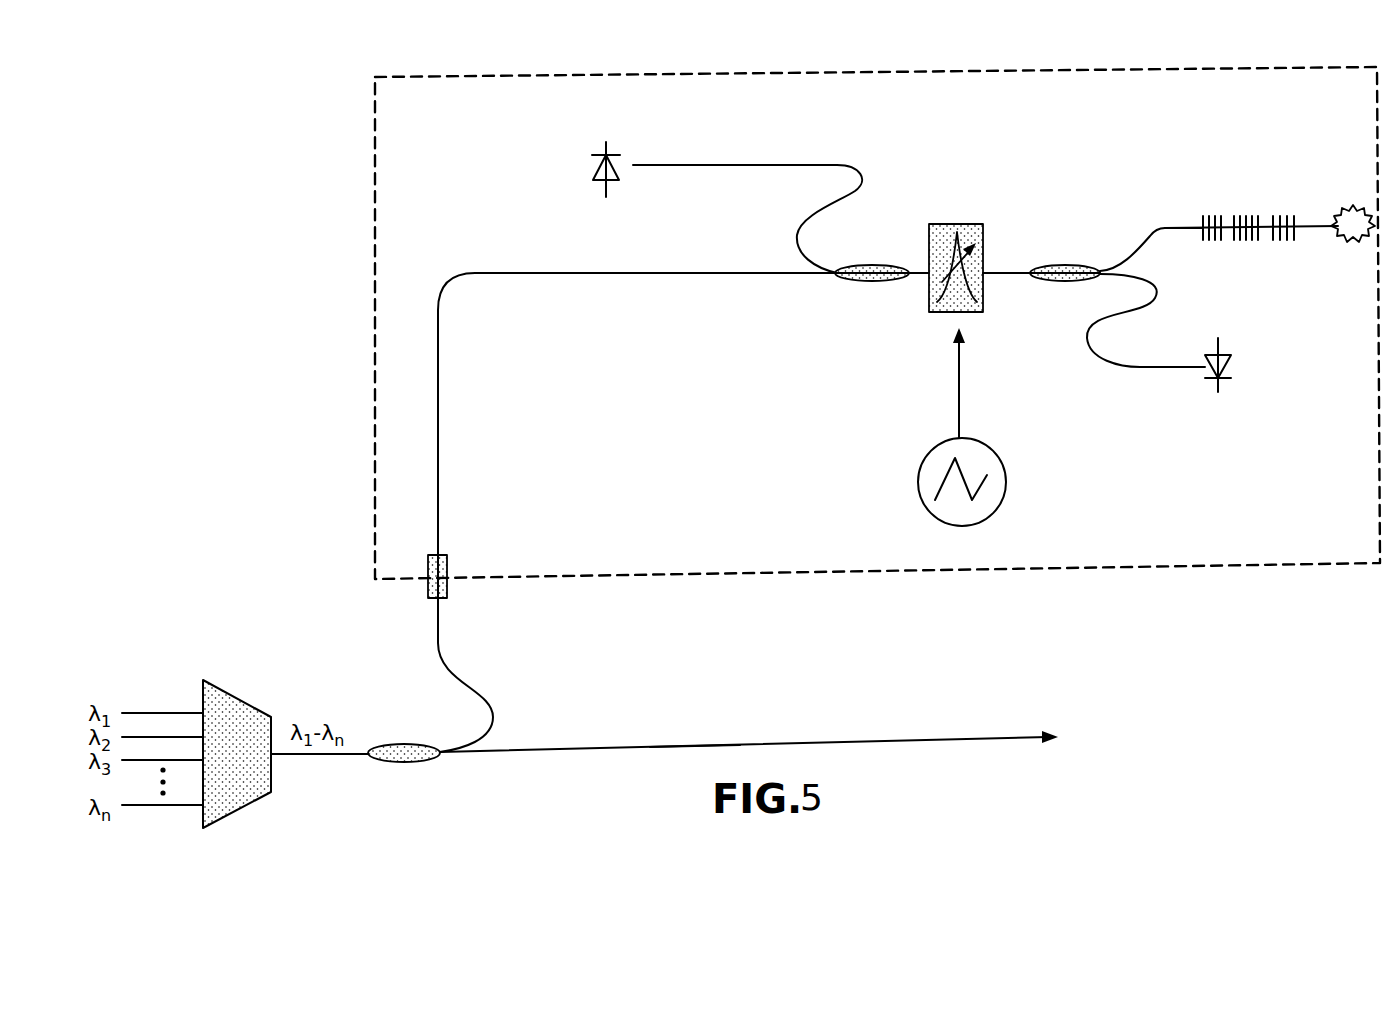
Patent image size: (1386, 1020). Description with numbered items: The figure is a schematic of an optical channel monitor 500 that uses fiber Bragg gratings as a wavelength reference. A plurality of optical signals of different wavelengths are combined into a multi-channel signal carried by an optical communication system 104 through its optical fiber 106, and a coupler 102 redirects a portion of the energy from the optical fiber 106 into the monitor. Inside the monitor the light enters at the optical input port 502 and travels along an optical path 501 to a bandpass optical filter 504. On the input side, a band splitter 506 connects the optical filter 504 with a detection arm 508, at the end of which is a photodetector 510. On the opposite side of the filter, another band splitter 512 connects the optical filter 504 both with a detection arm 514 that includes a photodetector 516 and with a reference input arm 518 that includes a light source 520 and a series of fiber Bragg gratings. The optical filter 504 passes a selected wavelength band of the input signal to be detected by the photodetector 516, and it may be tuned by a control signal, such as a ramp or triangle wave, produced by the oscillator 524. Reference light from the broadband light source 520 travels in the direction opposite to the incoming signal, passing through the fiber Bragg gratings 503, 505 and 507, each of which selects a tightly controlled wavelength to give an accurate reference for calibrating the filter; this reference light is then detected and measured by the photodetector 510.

The coupler 102 is at (405, 745).
The optical communication system 104 is at (758, 708).
The optical fiber 106 is at (695, 745).
The optical channel monitor 500 is at (362, 291).
The optical path 501 is at (438, 376).
The optical input port 502 is at (447, 566).
The fiber Bragg grating 503 is at (1285, 244).
The optical filter 504 is at (957, 224).
The fiber Bragg grating 505 is at (1243, 246).
The band splitter 506 is at (872, 282).
The fiber Bragg grating 507 is at (1210, 246).
The detection arm 508 is at (790, 237).
The photodetector 510 is at (592, 168).
The band splitter 512 is at (1065, 282).
The detection arm 514 is at (1137, 372).
The photodetector 516 is at (1233, 367).
The reference input arm 518 is at (1183, 225).
The light source 520 is at (1352, 242).
The oscillator 524 is at (1007, 482).